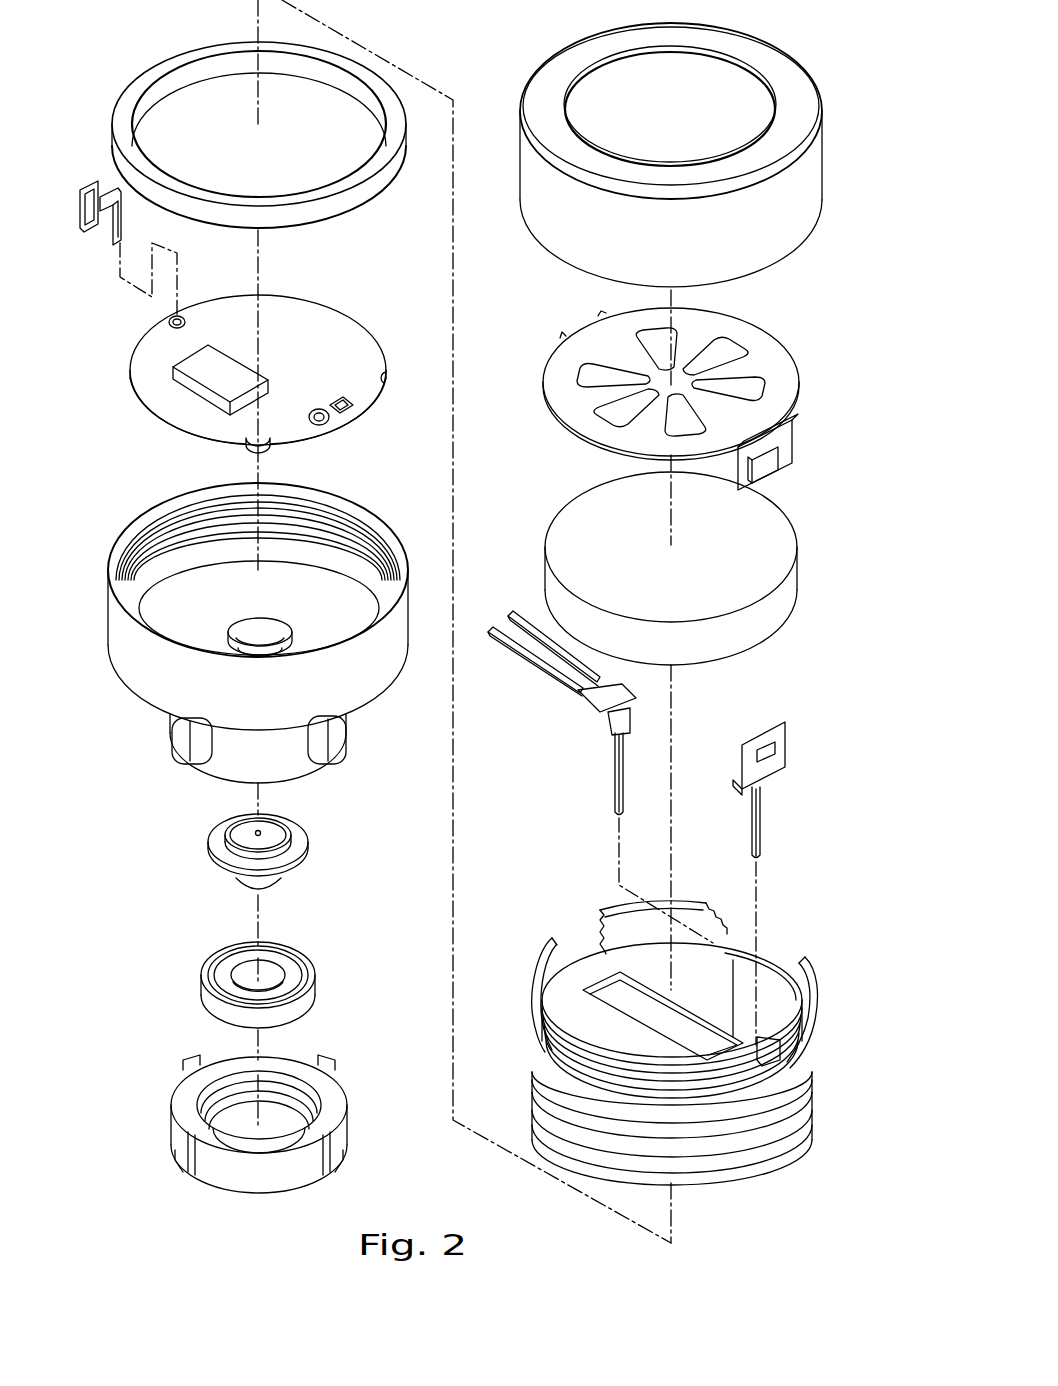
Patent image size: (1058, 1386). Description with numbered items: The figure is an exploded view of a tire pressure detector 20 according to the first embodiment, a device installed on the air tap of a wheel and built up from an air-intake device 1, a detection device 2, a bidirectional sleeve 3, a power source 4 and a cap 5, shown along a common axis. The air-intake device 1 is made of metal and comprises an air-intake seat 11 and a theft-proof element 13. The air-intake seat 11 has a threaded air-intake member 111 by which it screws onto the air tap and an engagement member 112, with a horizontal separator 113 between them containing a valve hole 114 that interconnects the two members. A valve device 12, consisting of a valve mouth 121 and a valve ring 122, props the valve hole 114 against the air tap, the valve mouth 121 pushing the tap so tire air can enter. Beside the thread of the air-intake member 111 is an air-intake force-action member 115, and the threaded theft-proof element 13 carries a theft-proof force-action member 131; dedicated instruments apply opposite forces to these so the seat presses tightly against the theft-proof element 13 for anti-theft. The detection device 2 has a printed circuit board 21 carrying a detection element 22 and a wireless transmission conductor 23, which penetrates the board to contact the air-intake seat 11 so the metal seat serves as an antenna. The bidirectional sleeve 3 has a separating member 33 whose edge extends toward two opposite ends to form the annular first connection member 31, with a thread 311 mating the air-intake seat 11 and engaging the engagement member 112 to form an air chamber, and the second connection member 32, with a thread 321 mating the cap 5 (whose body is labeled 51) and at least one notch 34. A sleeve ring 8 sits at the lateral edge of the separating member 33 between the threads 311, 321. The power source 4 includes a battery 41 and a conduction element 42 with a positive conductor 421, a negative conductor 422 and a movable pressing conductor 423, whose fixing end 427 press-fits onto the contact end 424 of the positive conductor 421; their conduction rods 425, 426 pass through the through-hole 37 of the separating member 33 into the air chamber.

The tire pressure detector 20 is at (478, 57).
The sleeve ring 8 is at (131, 108).
The wireless transmission conductor 23 is at (102, 222).
The detection device 2 is at (222, 384).
The printed circuit board 21 is at (190, 412).
The detection element 22 is at (192, 384).
The air-intake device 1 is at (244, 846).
The air-intake seat 11 is at (248, 648).
The air-intake member 111 is at (345, 735).
The engagement member 112 is at (145, 678).
The horizontal separator 113 is at (305, 600).
The valve hole 114 is at (228, 630).
The air-intake force-action member 115 is at (322, 752).
The valve device 12 is at (201, 921).
The valve mouth 121 is at (200, 843).
The valve ring 122 is at (215, 960).
The theft-proof element 13 is at (217, 1136).
The theft-proof force-action member 131 is at (205, 1160).
The cap 5 is at (703, 143).
The cover side wall 51 is at (805, 185).
The power source 4 is at (709, 676).
The battery 41 is at (780, 520).
The conduction element 42 is at (689, 676).
The fixing end 427 is at (770, 430).
The movable pressing conductor 423 is at (795, 455).
The negative conductor 422 is at (667, 777).
The conduction rod 426 is at (618, 838).
The positive conductor 421 is at (769, 849).
The contact end 424 is at (776, 762).
The conduction rod 425 is at (752, 828).
The bidirectional sleeve 3 is at (691, 1061).
The first connection member 31 is at (684, 1156).
The thread 311 is at (745, 1150).
The second connection member 32 is at (717, 1009).
The thread 321 is at (810, 1022).
The separating member 33 is at (765, 980).
The notch 34 is at (540, 1060).
The through-hole 37 is at (760, 1068).